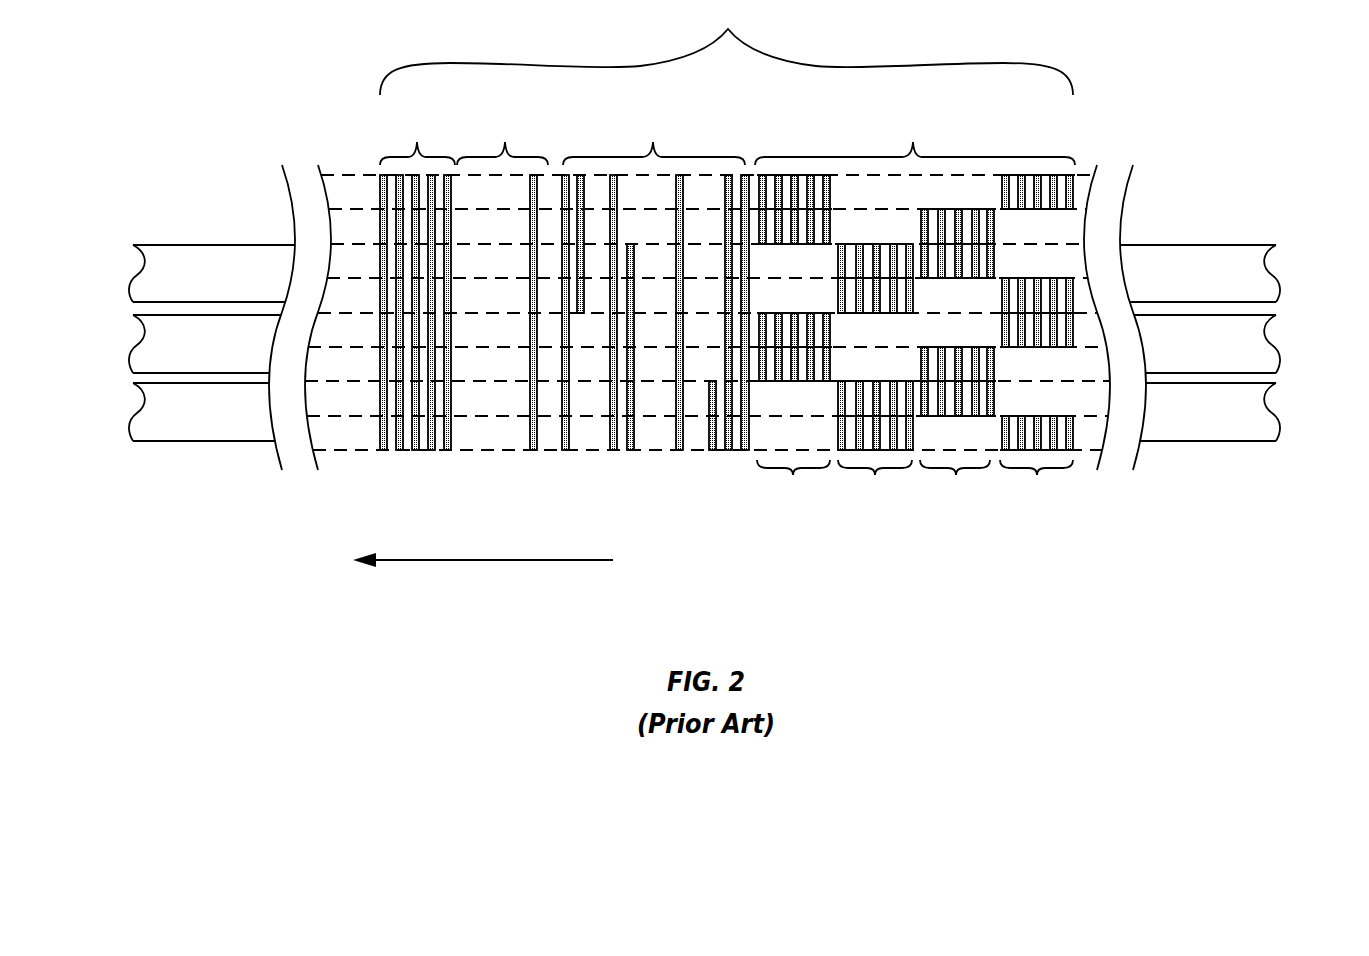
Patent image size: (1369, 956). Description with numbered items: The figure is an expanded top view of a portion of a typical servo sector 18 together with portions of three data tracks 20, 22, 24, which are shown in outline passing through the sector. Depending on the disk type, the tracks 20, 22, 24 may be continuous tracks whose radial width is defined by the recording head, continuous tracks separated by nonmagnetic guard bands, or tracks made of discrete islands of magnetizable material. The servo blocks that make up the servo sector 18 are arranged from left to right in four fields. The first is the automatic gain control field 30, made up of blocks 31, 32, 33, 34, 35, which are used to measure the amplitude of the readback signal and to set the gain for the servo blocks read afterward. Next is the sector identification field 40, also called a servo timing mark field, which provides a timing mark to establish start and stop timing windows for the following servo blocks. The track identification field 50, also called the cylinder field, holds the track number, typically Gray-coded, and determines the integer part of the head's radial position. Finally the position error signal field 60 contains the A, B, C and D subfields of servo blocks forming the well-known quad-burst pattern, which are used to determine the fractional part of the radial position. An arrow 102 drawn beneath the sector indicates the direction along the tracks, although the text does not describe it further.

The servo sector 18 is at (726, 47).
The data track 20 is at (145, 407).
The data track 22 is at (145, 335).
The data track 24 is at (145, 262).
The automatic gain control (AGC) field 30 is at (419, 330).
The AGC block 31 is at (383, 452).
The AGC block 32 is at (399, 452).
The AGC block 33 is at (416, 452).
The AGC block 34 is at (432, 452).
The AGC block 35 is at (448, 452).
The sector identification (SID) field 40 is at (540, 152).
The track identification (TID) field 50 is at (727, 152).
The position error signal (PES) field 60 is at (1045, 152).
The direction of disk rotation 102 is at (530, 558).